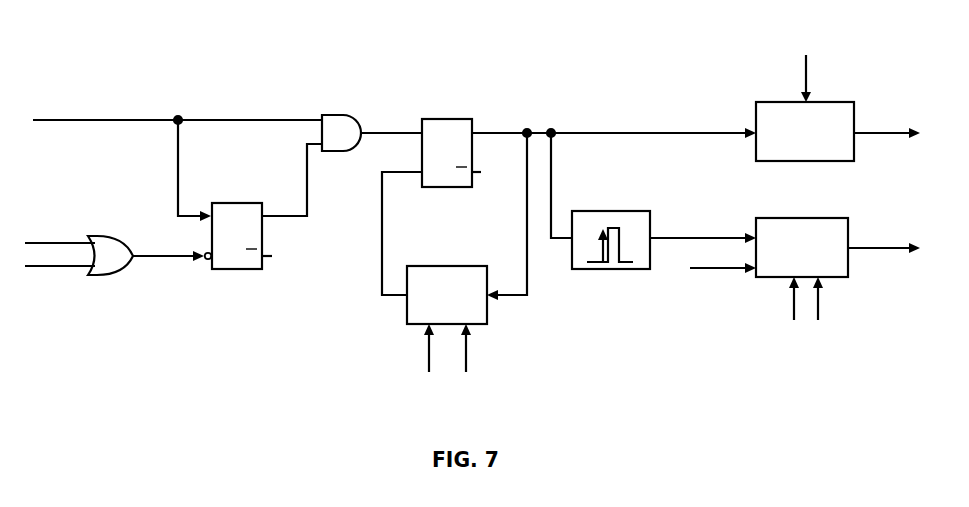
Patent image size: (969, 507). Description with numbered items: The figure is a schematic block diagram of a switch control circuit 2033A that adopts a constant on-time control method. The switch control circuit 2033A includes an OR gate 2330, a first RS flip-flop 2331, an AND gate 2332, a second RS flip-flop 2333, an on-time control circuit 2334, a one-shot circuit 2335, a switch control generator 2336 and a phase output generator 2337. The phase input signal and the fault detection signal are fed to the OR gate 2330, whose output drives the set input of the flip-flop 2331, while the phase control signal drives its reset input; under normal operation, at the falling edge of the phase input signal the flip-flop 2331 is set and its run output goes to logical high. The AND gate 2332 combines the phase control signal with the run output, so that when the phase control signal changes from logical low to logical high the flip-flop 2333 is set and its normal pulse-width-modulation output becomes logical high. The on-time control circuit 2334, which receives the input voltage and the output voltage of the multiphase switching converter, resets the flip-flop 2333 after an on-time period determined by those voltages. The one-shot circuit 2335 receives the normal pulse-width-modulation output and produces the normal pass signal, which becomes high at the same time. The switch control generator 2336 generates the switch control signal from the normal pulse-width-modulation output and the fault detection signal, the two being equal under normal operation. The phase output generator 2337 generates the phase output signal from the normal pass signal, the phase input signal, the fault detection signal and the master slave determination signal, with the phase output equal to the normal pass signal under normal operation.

The switch control circuit 2033A is at (282, 30).
The OR gate 2330 is at (97, 279).
The RS flip-flop 2331 is at (230, 272).
The AND gate 2332 is at (353, 152).
The RS flip-flop 2333 is at (446, 188).
The on-time control circuit 2334 is at (420, 325).
The one-shot circuit 2335 is at (598, 270).
The switch control generator 2336 is at (774, 162).
The phase output generator 2337 is at (770, 278).